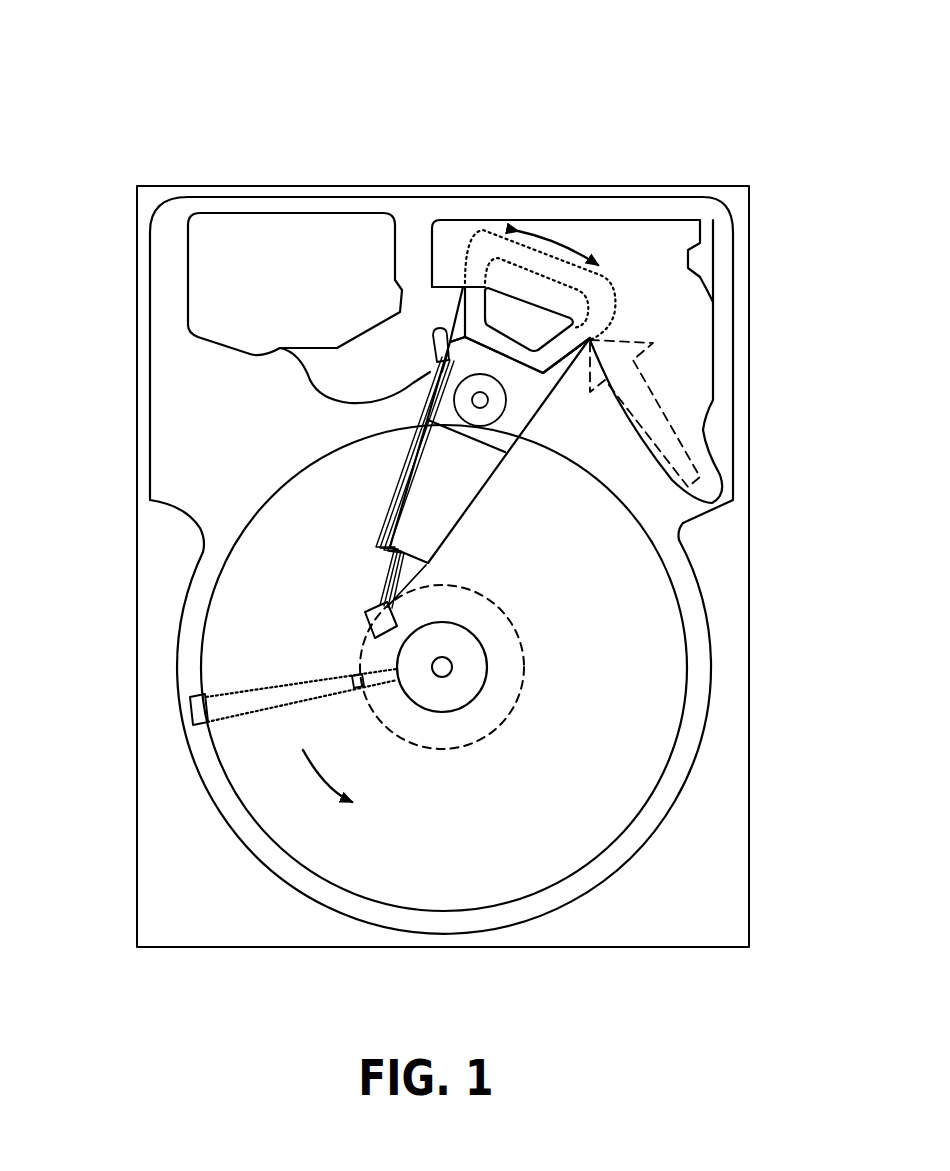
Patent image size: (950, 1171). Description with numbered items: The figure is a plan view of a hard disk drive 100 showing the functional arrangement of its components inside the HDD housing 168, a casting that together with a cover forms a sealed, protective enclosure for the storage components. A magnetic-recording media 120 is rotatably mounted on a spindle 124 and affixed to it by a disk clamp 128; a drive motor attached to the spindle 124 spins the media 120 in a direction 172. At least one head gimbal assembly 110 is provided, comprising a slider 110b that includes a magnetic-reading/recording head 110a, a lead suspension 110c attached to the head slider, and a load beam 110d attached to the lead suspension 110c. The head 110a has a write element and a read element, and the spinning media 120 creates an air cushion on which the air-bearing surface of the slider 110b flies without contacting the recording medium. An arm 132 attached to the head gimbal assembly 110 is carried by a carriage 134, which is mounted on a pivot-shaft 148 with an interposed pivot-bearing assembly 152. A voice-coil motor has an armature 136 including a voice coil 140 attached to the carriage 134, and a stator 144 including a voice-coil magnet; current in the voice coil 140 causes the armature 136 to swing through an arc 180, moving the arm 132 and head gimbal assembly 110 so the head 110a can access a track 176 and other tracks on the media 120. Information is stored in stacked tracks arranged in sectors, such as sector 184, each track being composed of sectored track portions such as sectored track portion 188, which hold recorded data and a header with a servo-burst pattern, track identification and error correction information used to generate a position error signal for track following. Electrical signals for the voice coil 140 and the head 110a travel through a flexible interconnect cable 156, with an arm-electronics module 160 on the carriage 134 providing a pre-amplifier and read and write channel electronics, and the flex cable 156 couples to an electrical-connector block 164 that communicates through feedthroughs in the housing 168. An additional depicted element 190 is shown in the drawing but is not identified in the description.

The hard disk drive 100 is at (70, 72).
The head gimbal assembly 110 is at (231, 486).
The magnetic-reading/recording head 110a is at (372, 615).
The slider 110b is at (382, 570).
The lead suspension 110c is at (378, 548).
The load beam 110d is at (375, 533).
The magnetic-recording media 120 is at (615, 615).
The spindle 124 is at (446, 667).
The disk clamp 128 is at (467, 687).
The arm 132 is at (437, 510).
The carriage 134 is at (500, 432).
The armature 136 is at (460, 325).
The voice coil 140 is at (474, 297).
The stator 144 is at (685, 302).
The pivot-shaft 148 is at (490, 402).
The pivot-bearing assembly 152 is at (500, 422).
The flexible interconnect cable 156 is at (300, 385).
The arm-electronics module 160 is at (436, 372).
The electrical-connector block 164 is at (215, 283).
The HDD housing 168 is at (733, 192).
The direction 172 is at (368, 795).
The track 176 is at (518, 628).
The arc 180 is at (570, 232).
The sector 184 is at (190, 708).
The sectored track portion 188 is at (343, 680).
The alternate actuator position 190 is at (670, 420).